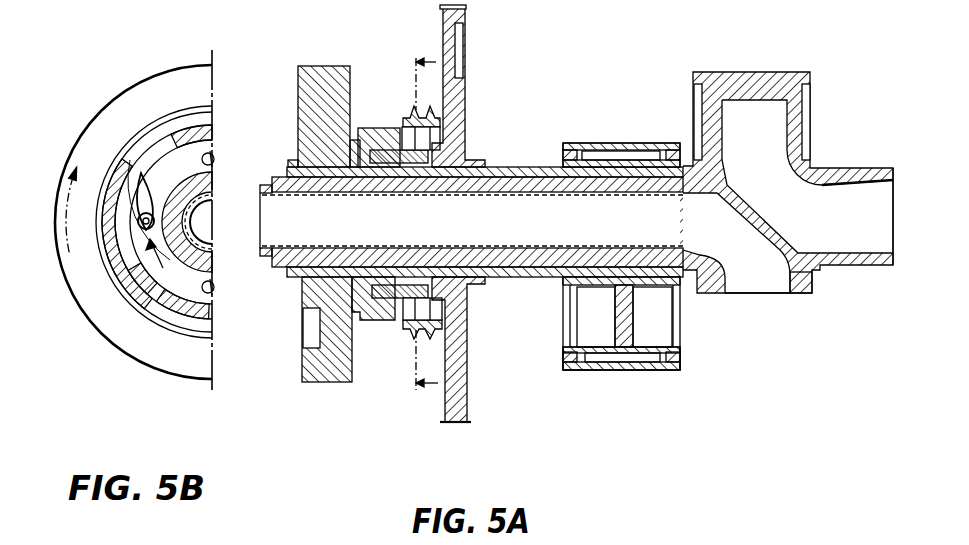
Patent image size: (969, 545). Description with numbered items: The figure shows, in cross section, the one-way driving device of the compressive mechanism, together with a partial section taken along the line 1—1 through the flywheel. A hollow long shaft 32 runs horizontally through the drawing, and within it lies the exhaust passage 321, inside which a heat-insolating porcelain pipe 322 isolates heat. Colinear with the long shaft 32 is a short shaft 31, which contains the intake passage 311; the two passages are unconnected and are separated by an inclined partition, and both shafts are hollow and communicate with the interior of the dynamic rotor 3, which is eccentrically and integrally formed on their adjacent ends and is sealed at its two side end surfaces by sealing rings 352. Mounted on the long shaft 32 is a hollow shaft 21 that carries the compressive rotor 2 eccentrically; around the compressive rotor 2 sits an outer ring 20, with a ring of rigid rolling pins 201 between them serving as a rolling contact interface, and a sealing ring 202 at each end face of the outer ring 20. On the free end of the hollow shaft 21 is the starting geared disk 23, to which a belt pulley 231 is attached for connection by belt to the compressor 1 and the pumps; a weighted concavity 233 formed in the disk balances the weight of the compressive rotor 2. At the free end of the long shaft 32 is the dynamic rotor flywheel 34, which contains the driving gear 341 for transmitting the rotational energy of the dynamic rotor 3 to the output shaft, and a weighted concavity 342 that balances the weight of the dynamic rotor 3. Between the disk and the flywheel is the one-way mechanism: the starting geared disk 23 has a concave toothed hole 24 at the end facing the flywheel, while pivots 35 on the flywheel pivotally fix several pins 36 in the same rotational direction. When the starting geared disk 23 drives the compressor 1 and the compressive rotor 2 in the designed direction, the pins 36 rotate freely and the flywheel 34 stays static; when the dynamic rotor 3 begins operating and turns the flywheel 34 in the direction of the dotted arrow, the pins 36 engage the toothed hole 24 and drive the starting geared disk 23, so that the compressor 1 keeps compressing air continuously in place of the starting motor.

In FIG. 5A, the compressor 1 is at (427, 223).
In FIG. 5A, the compressive rotor 2 is at (621, 372).
In FIG. 5A, the dynamic rotor 3 is at (752, 82).
In FIG. 5A, the outer ring 20 is at (590, 372).
In FIG. 5A, the hollow shaft 21 is at (521, 278).
In FIG. 5B, the starting geared disk 23 is at (190, 124).
In FIG. 5A, the starting geared disk 23 is at (467, 377).
In FIG. 5B, the toothed hole 24 is at (207, 140).
In FIG. 5A, the toothed hole 24 is at (400, 128).
In FIG. 5A, the short shaft 31 is at (850, 170).
In FIG. 5B, the long shaft 32 is at (150, 293).
In FIG. 5A, the long shaft 32 is at (536, 166).
In FIG. 5B, the dynamic rotor flywheel 34 is at (92, 120).
In FIG. 5A, the dynamic rotor flywheel 34 is at (327, 384).
In FIG. 5B, the pivot 35 is at (149, 212).
In FIG. 5A, the pivot 35 is at (399, 132).
In FIG. 5B, the pin 36 is at (141, 186).
In FIG. 5A, the pin 36 is at (413, 108).
In FIG. 5A, the rolling pins 201 is at (650, 372).
In FIG. 5A, the sealing ring 202 is at (573, 372).
In FIG. 5B, the belt pulley 231 is at (183, 333).
In FIG. 5A, the belt pulley 231 is at (410, 338).
In FIG. 5A, the weighted concavity 233 is at (463, 36).
In FIG. 5A, the intake passage 311 is at (735, 120).
In FIG. 5A, the exhaust passage 321 is at (752, 298).
In FIG. 5B, the heat-insolating porcelain pipe 322 is at (207, 203).
In FIG. 5A, the heat-insolating porcelain pipe 322 is at (552, 194).
In FIG. 5A, the driving gear 341 is at (375, 321).
In FIG. 5A, the weighted concavity 342 is at (318, 340).
In FIG. 5A, the sealing rings 352 is at (804, 298).